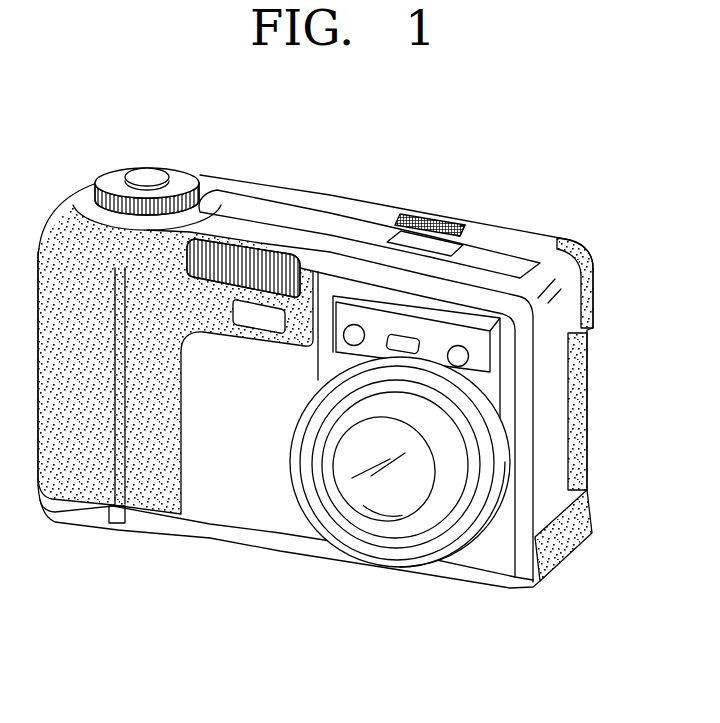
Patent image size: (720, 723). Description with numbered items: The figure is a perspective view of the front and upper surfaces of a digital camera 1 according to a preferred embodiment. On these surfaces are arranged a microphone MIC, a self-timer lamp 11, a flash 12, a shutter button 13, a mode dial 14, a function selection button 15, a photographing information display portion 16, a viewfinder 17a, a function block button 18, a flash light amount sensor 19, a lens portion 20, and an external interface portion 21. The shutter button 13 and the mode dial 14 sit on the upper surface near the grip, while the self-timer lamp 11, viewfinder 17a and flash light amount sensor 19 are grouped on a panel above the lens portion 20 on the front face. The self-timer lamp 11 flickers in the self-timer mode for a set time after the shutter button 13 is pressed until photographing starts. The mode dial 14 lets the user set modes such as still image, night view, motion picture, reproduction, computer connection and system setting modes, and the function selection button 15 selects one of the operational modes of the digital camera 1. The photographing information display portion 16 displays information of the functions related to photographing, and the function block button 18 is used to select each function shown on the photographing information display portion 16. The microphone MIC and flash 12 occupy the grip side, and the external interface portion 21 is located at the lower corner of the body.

The digital camera 1 is at (232, 618).
The self-timer lamp 11 is at (356, 327).
The flash 12 is at (238, 257).
The microphone MIC is at (267, 313).
The shutter button 13 is at (148, 177).
The mode dial 14 is at (113, 180).
The function selection button 15 is at (420, 220).
The photographing information display portion 16 is at (427, 247).
The viewfinder 17a is at (417, 340).
The function block button 18 is at (453, 230).
The flash light amount sensor 19 is at (468, 355).
The lens portion 20 is at (410, 473).
The external interface portion 21 is at (595, 522).